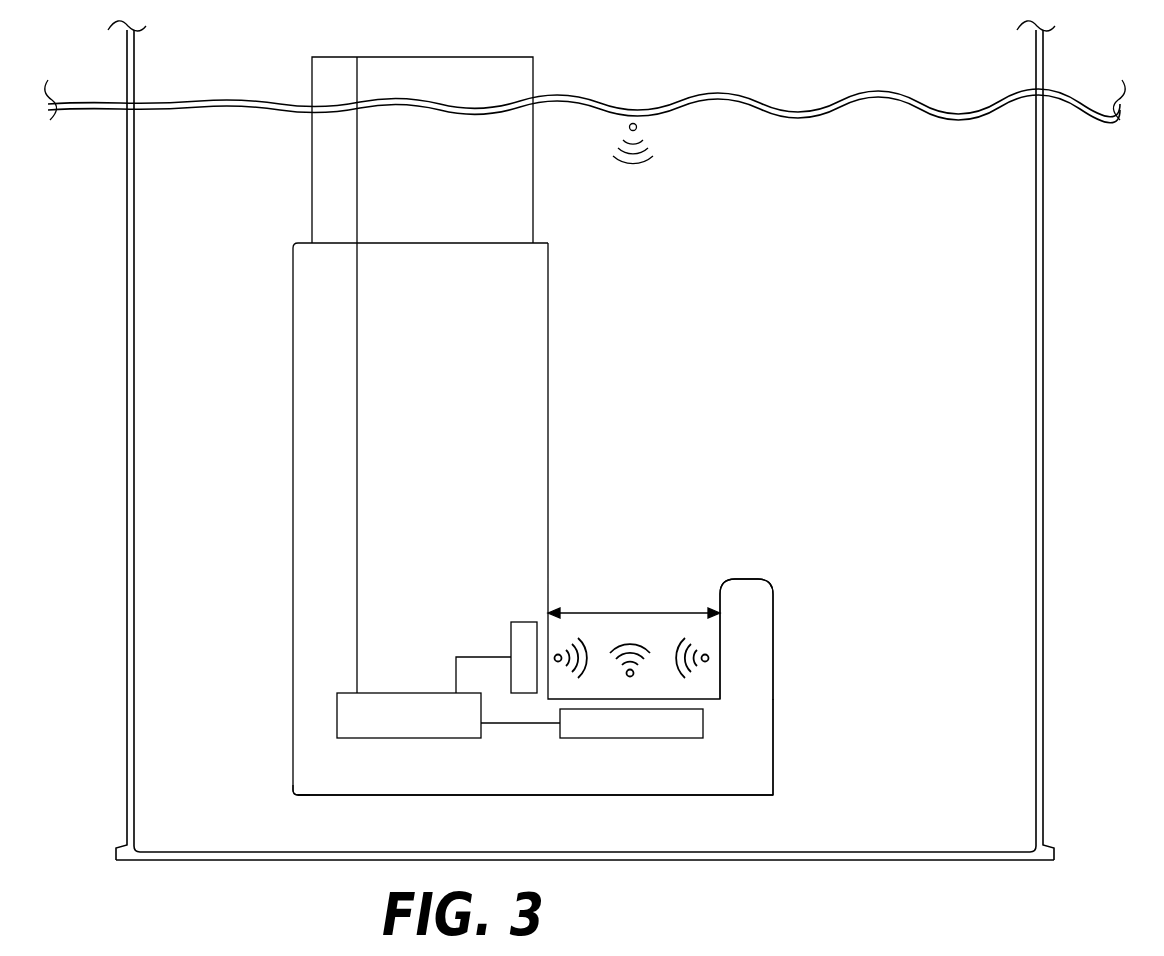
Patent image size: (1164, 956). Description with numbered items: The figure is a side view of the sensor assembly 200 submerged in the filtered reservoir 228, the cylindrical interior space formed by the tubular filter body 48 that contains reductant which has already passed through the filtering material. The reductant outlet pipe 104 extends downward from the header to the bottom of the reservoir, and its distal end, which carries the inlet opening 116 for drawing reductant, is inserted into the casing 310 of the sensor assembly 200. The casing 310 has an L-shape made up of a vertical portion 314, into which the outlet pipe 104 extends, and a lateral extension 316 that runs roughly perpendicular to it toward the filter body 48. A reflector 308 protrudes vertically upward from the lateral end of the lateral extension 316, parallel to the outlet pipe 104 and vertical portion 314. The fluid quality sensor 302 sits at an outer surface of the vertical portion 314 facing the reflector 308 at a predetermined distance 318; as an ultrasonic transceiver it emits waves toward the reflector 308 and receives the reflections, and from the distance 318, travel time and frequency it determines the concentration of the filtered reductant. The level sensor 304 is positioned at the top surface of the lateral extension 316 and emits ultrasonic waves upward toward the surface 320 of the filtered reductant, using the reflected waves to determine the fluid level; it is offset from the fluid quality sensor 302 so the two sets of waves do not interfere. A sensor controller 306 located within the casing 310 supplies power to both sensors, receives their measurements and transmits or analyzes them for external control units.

The tubular filter body 48 is at (127, 682).
The reductant outlet pipe 104 is at (313, 115).
The inlet opening 116 is at (330, 797).
The sensor assembly 200 is at (501, 497).
The filtered reservoir 228 is at (152, 257).
The fluid quality sensor 302 is at (524, 693).
The level sensor 304 is at (677, 738).
The sensor controller 306 is at (337, 725).
The reflector 308 is at (765, 646).
The casing 310 is at (543, 280).
The vertical portion 314 is at (305, 615).
The lateral extension 316 is at (693, 790).
The predetermined distance 318 is at (623, 613).
The surface 320 is at (860, 104).